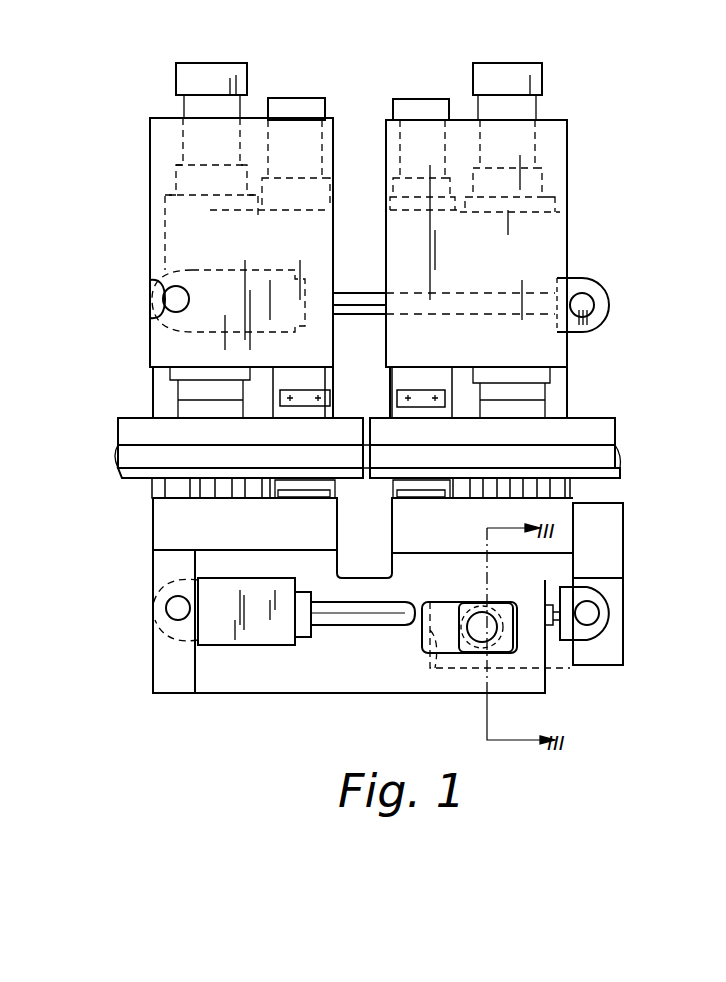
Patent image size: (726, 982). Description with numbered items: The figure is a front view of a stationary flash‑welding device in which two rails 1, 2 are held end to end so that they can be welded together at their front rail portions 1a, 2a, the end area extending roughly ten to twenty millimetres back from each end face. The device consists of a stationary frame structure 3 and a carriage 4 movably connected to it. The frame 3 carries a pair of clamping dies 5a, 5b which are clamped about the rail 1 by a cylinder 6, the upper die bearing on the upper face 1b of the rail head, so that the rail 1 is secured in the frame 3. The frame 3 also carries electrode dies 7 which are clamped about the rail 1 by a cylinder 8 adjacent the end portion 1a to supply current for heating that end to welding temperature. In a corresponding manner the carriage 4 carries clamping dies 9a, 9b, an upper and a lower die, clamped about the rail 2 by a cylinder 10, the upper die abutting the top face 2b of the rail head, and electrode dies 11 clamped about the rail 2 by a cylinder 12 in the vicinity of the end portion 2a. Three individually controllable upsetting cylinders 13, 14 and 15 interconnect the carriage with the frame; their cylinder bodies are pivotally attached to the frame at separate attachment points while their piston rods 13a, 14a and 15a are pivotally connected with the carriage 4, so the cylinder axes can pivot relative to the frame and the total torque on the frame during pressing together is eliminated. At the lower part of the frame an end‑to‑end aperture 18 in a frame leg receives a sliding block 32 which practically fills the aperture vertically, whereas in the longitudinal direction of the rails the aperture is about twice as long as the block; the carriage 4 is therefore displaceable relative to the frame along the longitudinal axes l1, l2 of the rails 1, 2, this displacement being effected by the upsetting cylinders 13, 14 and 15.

The rail 1 is at (128, 428).
The front rail portion 1a is at (367, 470).
The upper face of the rail head 1b is at (148, 412).
The rail 2 is at (605, 435).
The front rail portion 2a is at (365, 460).
The top face of the rail head 2b is at (590, 420).
The stationary frame structure 3 is at (150, 192).
The carriage 4 is at (553, 143).
The clamping die 5a is at (190, 385).
The clamping die 5b is at (165, 495).
The cylinder 6 is at (200, 75).
The electrode dies 7 is at (320, 385).
The cylinder 8 is at (295, 100).
The clamping die 9a is at (530, 392).
The clamping die 9b is at (555, 485).
The cylinder 10 is at (523, 80).
The electrode dies 11 is at (455, 395).
The cylinder 12 is at (408, 100).
The upsetting cylinder 13 is at (172, 270).
The piston rod 13a is at (355, 293).
The upsetting cylinder 14 is at (600, 607).
The piston rod 14a is at (552, 625).
The upsetting cylinder 15 is at (165, 590).
The piston rod 15a is at (375, 630).
The end-to-end aperture 18 is at (440, 660).
The sliding block 32 is at (480, 655).
The longitudinal axis l1 is at (135, 470).
The longitudinal axis l2 is at (615, 450).